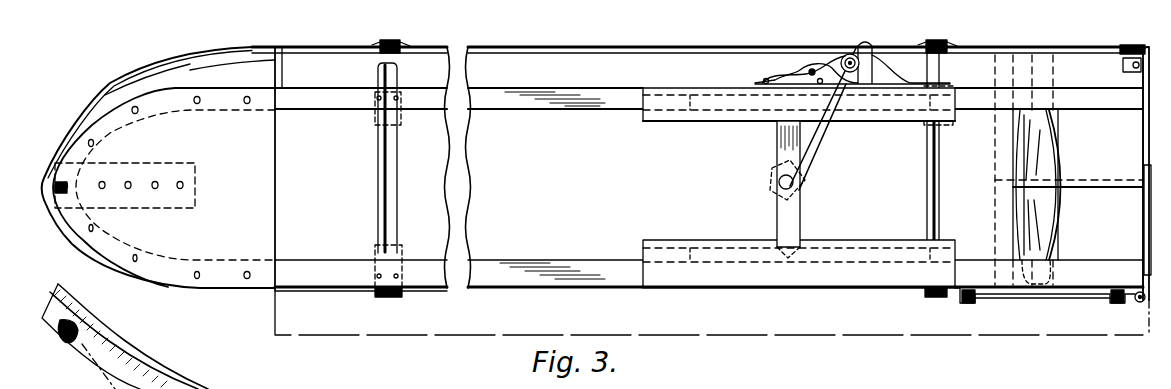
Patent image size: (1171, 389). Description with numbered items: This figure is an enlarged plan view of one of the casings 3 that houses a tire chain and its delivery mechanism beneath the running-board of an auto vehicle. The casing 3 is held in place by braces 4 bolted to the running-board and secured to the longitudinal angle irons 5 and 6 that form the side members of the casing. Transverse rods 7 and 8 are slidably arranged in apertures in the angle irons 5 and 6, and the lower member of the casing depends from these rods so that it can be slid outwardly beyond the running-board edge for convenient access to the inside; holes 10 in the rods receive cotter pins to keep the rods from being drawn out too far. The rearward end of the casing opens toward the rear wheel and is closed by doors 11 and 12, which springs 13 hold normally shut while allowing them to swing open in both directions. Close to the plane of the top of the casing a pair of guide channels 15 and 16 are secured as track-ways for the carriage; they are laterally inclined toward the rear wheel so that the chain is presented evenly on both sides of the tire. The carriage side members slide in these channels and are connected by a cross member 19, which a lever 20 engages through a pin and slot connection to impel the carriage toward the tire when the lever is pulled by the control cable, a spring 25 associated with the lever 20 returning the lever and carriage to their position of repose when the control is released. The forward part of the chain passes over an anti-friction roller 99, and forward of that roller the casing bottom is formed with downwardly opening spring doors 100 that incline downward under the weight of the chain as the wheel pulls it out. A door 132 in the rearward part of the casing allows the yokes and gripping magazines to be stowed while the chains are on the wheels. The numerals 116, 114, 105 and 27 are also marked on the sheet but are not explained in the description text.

The casing 3 is at (257, 287).
The longitudinal angle iron 5 is at (515, 262).
The longitudinal angle iron 6 is at (540, 112).
The transverse rod 7 is at (385, 182).
The transverse rod 8 is at (927, 219).
The hole 10 is at (400, 44).
The door 11 is at (1146, 216).
The door 12 is at (1143, 138).
The spring 13 is at (1125, 60).
The guide channel 15 is at (712, 118).
The guide channel 16 is at (718, 240).
The cross member 19 is at (777, 160).
The lever 20 is at (818, 142).
The spring 25 is at (795, 72).
The anti-friction roller 99 is at (1058, 228).
The spring door 100 is at (1126, 190).
The door 132 is at (1063, 296).
The hull rim band 116 is at (188, 378).
The hull member 114 is at (260, 386).
The bow fitting 105 is at (30, 387).
The section line 27 is at (920, 388).
The brace 4 is at (952, 383).